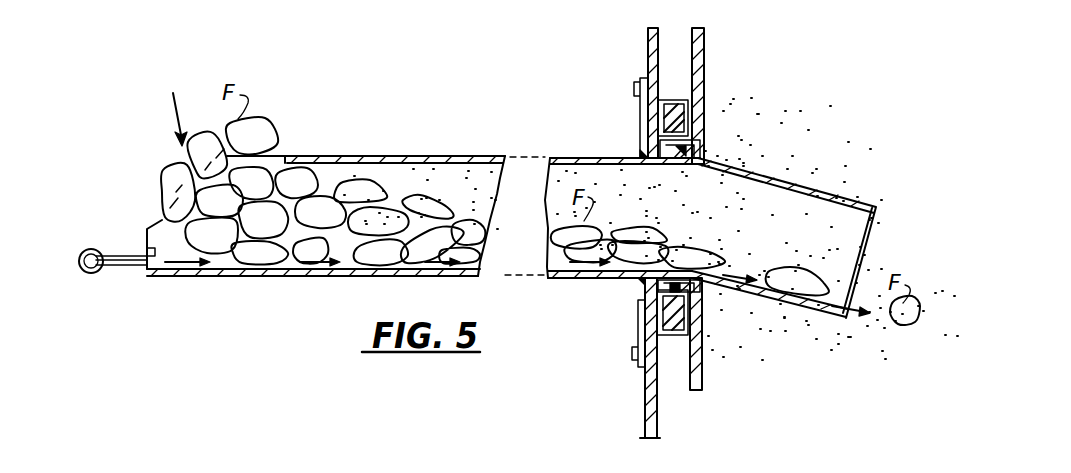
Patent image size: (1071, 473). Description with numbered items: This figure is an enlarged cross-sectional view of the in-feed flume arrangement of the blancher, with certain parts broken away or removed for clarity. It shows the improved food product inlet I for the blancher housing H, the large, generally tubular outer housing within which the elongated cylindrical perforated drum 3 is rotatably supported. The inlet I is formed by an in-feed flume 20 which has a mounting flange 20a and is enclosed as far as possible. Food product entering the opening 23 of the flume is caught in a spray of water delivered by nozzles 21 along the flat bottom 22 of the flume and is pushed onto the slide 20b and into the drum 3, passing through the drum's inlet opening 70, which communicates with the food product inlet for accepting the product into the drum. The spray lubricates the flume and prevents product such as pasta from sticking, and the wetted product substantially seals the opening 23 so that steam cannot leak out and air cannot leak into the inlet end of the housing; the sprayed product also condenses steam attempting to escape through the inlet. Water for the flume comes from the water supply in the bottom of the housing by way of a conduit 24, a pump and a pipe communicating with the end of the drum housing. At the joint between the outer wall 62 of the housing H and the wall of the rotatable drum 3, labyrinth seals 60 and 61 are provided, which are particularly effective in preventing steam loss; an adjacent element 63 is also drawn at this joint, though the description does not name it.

The in-feed flume 20 is at (418, 157).
The mounting flange 20a is at (645, 332).
The slide 20b is at (810, 188).
The nozzles 21 is at (132, 253).
The flat bottom 22 is at (230, 263).
The opening 23 is at (166, 228).
The conduit 24 is at (92, 261).
The perforated drum 3 is at (680, 380).
The labyrinth seal 60 is at (684, 120).
The labyrinth seal 61 is at (702, 285).
The outer wall 62 is at (648, 32).
The bracket plate 63 is at (706, 55).
The inlet opening 70 is at (700, 154).
The housing H is at (638, 44).
The food product inlet I is at (613, 138).